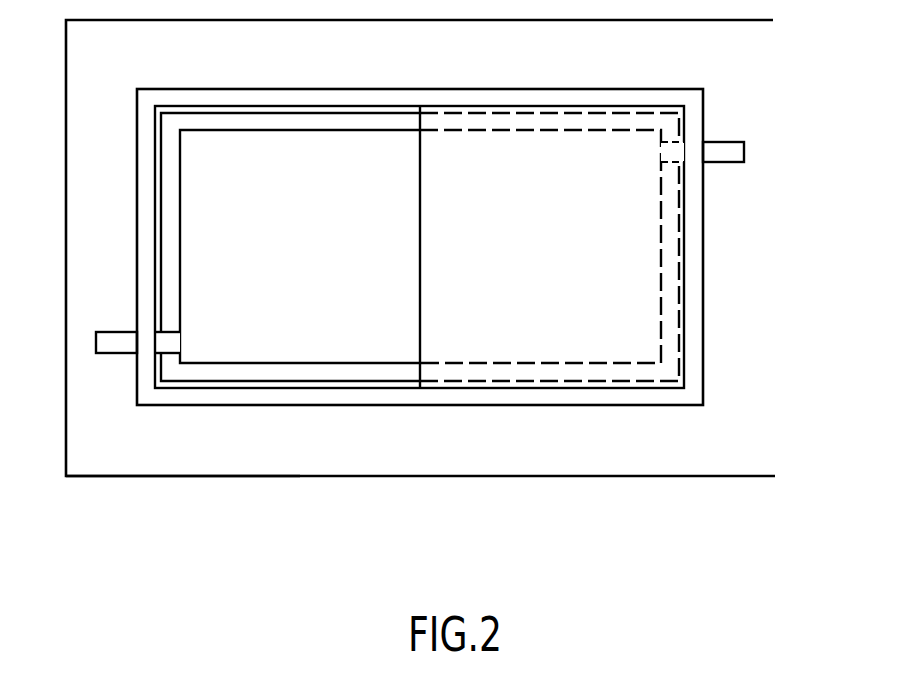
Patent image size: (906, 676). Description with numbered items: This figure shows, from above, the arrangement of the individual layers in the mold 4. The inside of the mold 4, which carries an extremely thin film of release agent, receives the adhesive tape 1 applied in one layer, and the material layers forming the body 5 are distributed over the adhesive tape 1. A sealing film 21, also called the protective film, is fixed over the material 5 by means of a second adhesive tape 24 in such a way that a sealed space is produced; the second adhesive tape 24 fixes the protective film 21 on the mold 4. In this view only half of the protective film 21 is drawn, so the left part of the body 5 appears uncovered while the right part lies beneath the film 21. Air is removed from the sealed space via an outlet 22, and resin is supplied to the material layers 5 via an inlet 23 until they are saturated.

The adhesive tape 1 is at (409, 306).
The mold 4 is at (502, 444).
The body 5 is at (292, 212).
The sealing film 21 is at (546, 212).
The outlet 22 is at (727, 152).
The inlet 23 is at (108, 338).
The second adhesive tape 24 is at (165, 459).